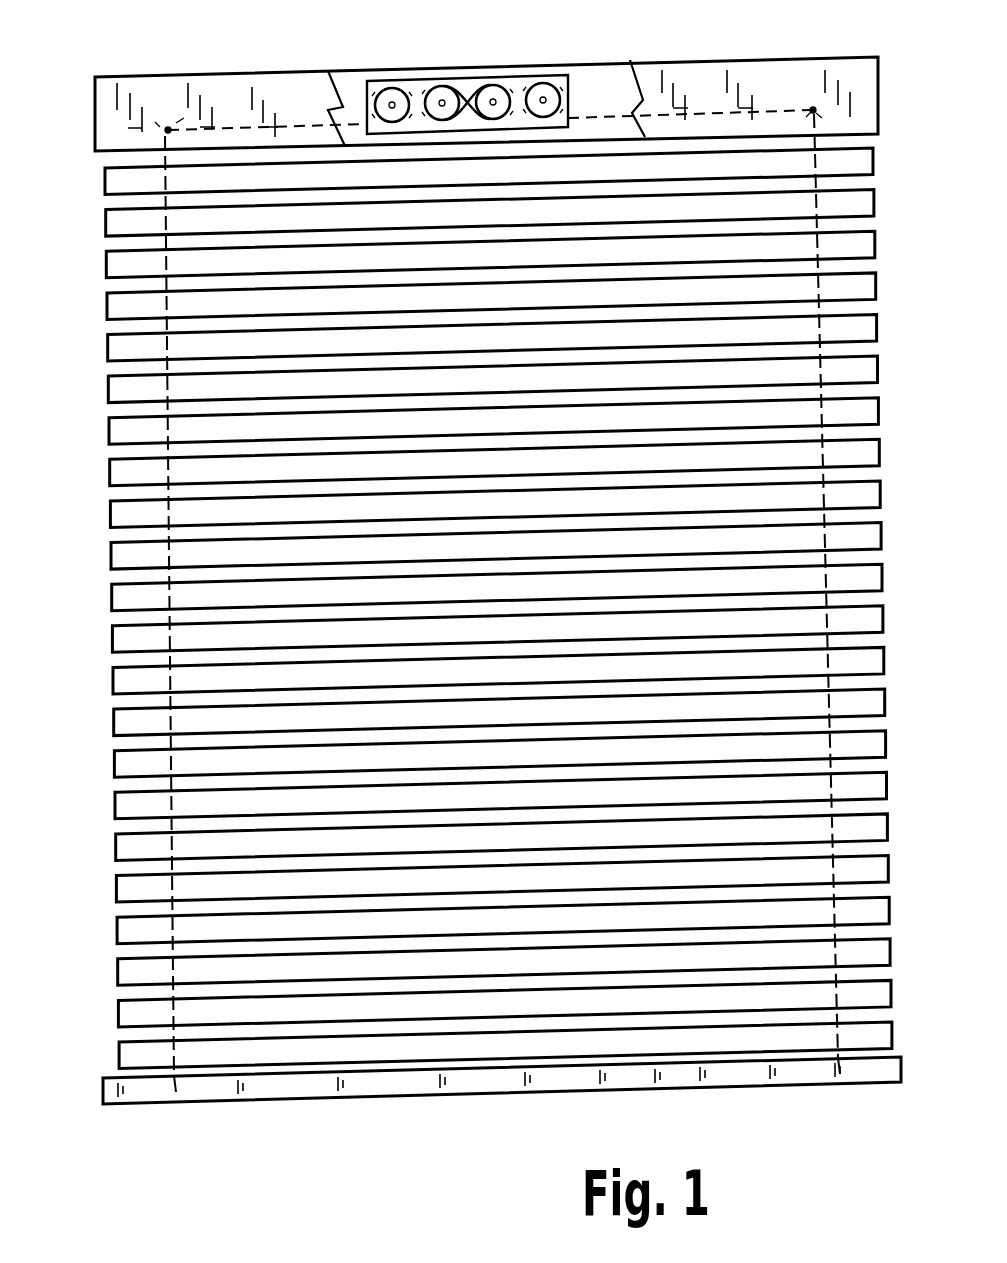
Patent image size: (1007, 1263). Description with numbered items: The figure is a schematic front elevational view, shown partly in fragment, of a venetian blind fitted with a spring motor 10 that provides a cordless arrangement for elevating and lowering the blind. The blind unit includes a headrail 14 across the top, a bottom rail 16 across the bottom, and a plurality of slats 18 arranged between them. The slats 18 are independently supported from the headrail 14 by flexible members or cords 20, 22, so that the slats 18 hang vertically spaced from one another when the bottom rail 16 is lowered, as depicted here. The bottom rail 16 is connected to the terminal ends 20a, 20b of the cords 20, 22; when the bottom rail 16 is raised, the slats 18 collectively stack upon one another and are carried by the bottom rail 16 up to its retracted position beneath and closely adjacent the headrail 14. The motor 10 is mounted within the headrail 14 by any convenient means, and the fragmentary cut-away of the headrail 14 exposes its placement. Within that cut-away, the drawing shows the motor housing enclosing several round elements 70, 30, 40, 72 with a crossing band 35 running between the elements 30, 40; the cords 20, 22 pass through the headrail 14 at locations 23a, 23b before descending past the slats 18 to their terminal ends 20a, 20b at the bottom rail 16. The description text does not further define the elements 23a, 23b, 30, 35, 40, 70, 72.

The motor 10 is at (570, 88).
The headrail 14 is at (208, 82).
The bottom rail 16 is at (418, 1078).
The slats 18 is at (118, 727).
The cord 20 is at (162, 200).
The terminal end of cord 20a is at (178, 1078).
The terminal end of cord 20b is at (840, 1058).
The cord 22 is at (822, 183).
The left cord guide opening 23a is at (164, 124).
The right cord guide opening 23b is at (816, 104).
The first spool 30 is at (429, 92).
The transmission band 35 is at (468, 88).
The second spool 40 is at (493, 91).
The first pulley 70 is at (392, 93).
The second pulley 72 is at (541, 88).